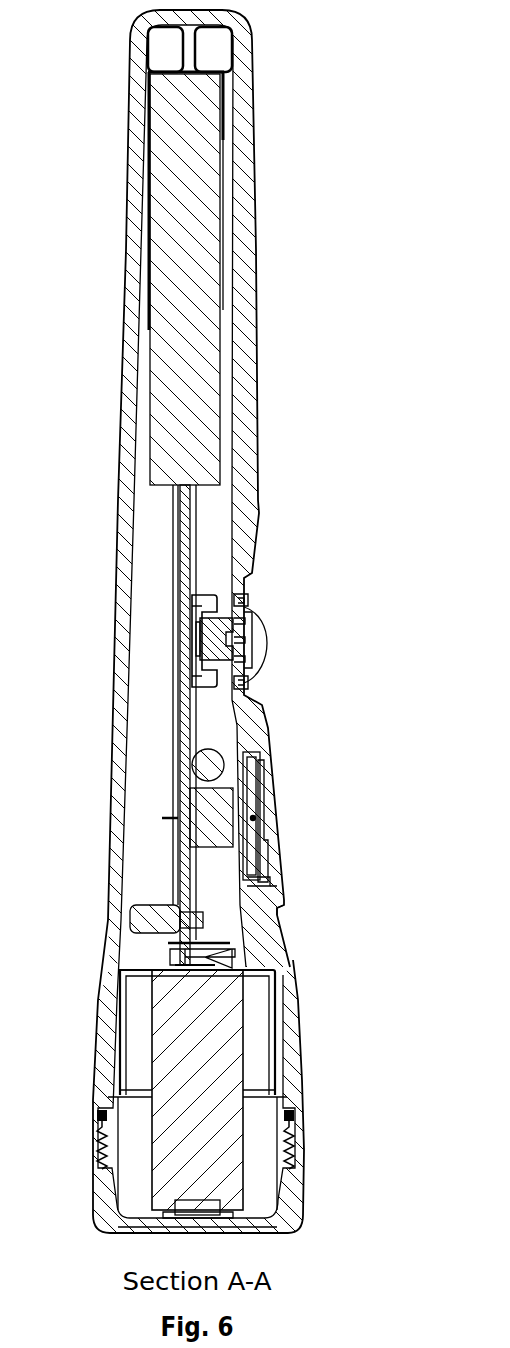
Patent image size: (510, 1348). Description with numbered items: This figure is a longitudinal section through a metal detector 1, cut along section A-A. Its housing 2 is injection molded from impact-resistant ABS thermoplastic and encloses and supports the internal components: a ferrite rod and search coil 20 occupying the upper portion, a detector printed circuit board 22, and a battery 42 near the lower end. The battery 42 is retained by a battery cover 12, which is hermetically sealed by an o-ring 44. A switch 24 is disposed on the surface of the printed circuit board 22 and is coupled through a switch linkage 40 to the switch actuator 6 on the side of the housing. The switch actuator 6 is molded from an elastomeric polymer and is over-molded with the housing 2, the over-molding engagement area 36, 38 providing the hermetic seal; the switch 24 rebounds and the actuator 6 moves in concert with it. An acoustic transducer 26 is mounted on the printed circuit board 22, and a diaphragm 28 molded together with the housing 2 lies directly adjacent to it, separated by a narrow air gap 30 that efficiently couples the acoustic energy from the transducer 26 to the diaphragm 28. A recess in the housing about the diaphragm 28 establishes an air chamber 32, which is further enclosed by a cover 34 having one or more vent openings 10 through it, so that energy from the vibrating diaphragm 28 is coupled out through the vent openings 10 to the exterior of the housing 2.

The metal detector 1 is at (51, 400).
The housing 2 is at (118, 598).
The switch actuator 6 is at (266, 643).
The vent openings 10 is at (278, 822).
The battery cover 12 is at (96, 1210).
The ferrite rod and search coil 20 is at (223, 222).
The detector printed circuit board 22 is at (191, 766).
The switch 24 is at (191, 641).
The acoustic transducer 26 is at (178, 860).
The diaphragm 28 is at (257, 846).
The air gap 30 is at (231, 853).
The air chamber 32 is at (254, 816).
The cover 34 is at (284, 884).
The over-molding engagement area 36 is at (247, 598).
The over-molding engagement area 38 is at (247, 683).
The switch linkage 40 is at (209, 596).
The battery 42 is at (150, 1040).
The o-ring 44 is at (100, 1114).